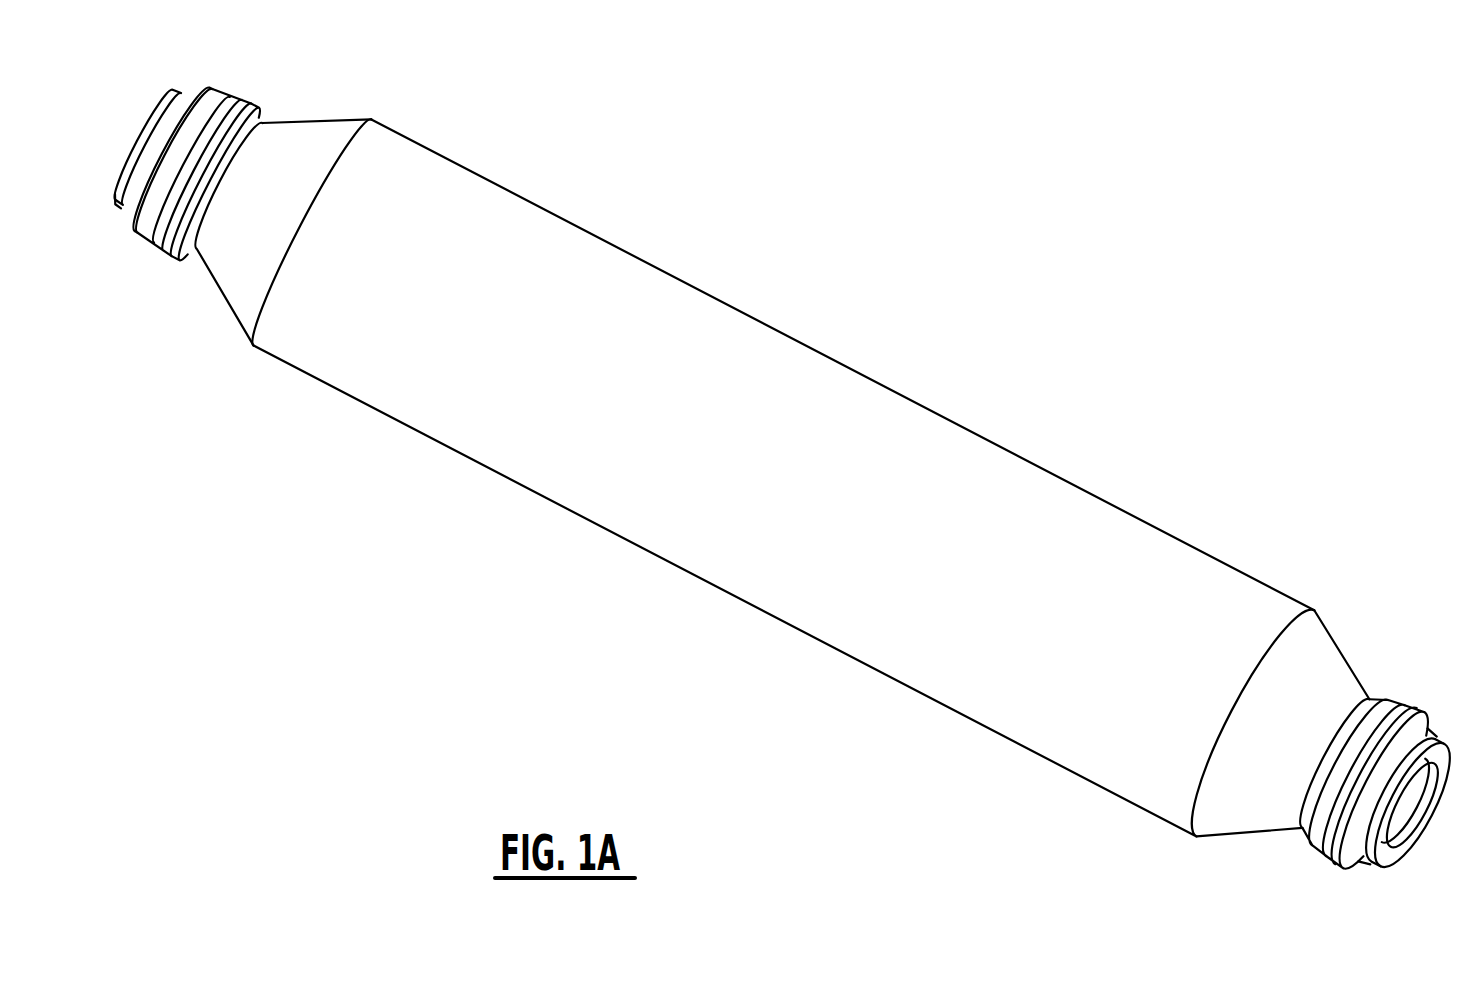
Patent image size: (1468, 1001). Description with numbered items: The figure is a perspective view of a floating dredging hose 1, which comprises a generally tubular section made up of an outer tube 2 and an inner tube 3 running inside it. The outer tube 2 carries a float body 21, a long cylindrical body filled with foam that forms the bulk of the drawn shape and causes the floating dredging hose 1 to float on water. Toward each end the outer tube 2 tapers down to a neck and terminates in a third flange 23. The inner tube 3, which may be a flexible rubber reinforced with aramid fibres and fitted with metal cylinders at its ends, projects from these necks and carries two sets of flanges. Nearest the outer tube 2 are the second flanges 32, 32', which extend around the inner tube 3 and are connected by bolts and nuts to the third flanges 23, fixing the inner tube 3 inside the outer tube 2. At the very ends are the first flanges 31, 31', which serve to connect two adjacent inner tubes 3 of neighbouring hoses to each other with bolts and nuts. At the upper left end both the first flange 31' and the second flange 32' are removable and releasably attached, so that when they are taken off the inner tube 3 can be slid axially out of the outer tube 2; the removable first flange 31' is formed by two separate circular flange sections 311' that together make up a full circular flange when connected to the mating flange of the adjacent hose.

The floating dredging hose 1 is at (985, 270).
The outer tube 2 is at (193, 248).
The inner tube 3 is at (138, 191).
The float body 21 is at (1138, 532).
The third flange 23 is at (247, 112).
The first flange 31 is at (1408, 825).
The second flange 32 is at (1386, 740).
The removable first flange 31' is at (144, 126).
The removable second flange 32' is at (212, 139).
The circular flange section 311' is at (104, 238).